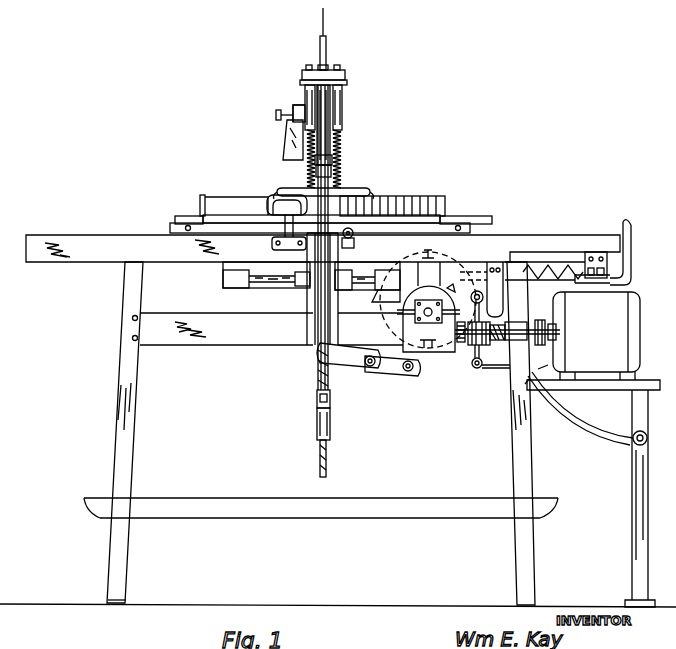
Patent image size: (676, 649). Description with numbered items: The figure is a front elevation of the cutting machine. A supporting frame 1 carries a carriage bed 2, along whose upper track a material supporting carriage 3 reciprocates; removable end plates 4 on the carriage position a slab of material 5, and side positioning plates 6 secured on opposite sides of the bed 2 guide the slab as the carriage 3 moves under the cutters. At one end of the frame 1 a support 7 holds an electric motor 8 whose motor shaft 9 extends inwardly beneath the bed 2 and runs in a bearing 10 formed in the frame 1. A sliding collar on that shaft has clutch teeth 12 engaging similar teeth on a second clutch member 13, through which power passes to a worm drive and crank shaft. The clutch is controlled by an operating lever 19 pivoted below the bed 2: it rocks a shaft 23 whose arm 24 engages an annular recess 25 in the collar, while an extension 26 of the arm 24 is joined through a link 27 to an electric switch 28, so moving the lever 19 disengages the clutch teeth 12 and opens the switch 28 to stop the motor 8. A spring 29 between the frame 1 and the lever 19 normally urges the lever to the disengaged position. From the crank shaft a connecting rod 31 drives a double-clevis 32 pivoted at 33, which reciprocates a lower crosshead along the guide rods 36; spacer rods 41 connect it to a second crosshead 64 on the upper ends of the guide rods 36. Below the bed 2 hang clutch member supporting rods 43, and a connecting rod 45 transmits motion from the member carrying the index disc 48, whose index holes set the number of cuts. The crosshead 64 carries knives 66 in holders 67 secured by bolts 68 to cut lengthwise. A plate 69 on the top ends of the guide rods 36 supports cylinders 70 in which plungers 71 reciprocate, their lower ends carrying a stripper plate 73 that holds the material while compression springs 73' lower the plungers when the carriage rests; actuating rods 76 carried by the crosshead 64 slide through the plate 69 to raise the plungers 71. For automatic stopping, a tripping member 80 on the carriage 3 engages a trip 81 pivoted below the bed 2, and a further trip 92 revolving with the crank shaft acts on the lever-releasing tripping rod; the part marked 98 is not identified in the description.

The supporting frame 1 is at (528, 453).
The carriage bed 2 is at (108, 240).
The material supporting carriage 3 is at (401, 228).
The removable end plates 4 is at (200, 206).
The slab of material 5 is at (383, 204).
The material side positioning plates 6 is at (268, 200).
The support 7 is at (600, 383).
The electric motor 8 is at (596, 336).
The motor shaft 9 is at (538, 318).
The bearing 10 is at (518, 342).
The clutch teeth 12 is at (460, 343).
The second clutch member 13 is at (470, 348).
The operating lever 19 is at (612, 272).
The shaft 23 is at (483, 295).
The arm 24 is at (483, 289).
The annular recess 25 is at (490, 338).
The extension 26 is at (480, 368).
The link 27 is at (498, 372).
The electric switch 28 is at (532, 366).
The spring 29 is at (558, 262).
The connecting rod 31 is at (415, 362).
The double-clevis 32 is at (385, 366).
The pivot 33 is at (370, 367).
The guide rods 36 is at (327, 458).
The spacer rod 41 is at (330, 325).
The clutch member supporting rods 43 is at (270, 283).
The connecting rod 45 is at (350, 296).
The index disc 48 is at (455, 288).
The second crosshead 64 is at (332, 106).
The knives 66 is at (284, 148).
The holders 67 is at (293, 108).
The bolts 68 is at (276, 115).
The plate 69 is at (347, 80).
The cylinders 70 is at (343, 118).
The plungers 71 is at (342, 146).
The stripper plate 73 is at (325, 180).
The compression springs 73' is at (359, 160).
The actuating rods 76 is at (326, 30).
The tripping member 80 is at (472, 216).
The trip 81 is at (631, 238).
The trip 92 is at (460, 294).
The stop screw 98 is at (354, 233).